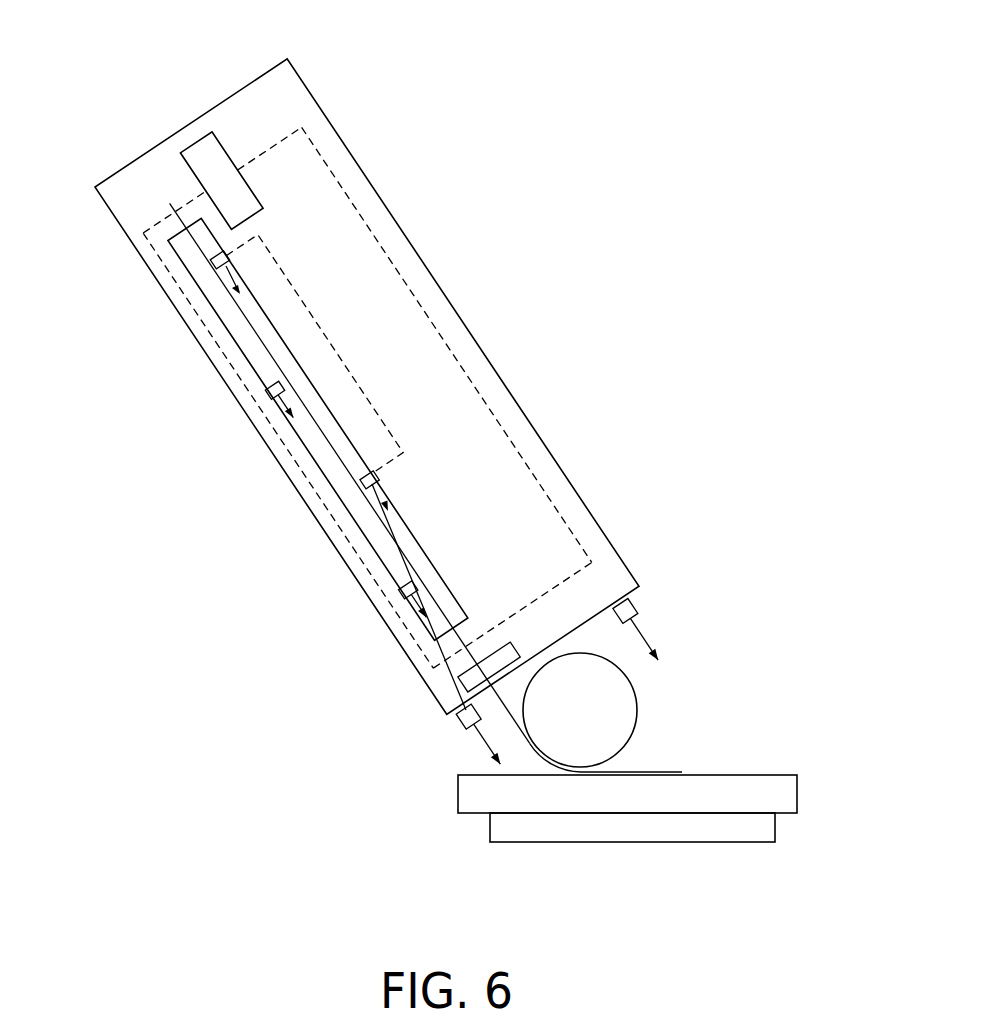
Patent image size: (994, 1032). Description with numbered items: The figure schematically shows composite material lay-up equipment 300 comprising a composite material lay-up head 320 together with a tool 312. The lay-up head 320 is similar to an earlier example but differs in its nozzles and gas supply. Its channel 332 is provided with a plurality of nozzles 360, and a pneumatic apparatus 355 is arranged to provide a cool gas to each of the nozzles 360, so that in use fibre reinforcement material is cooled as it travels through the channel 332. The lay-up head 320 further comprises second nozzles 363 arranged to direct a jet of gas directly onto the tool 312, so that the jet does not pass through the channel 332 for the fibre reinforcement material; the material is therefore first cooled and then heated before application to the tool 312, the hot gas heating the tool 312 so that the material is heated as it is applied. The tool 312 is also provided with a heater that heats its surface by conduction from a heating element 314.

The composite material lay-up equipment 300 is at (117, 44).
The tool 312 is at (812, 796).
The heating element 314 is at (722, 835).
The composite material lay-up head 320 is at (333, 122).
The channel 332 is at (419, 545).
The pneumatic apparatus 355 is at (204, 153).
The nozzles 360 is at (212, 263).
The second nozzles 363 is at (638, 607).